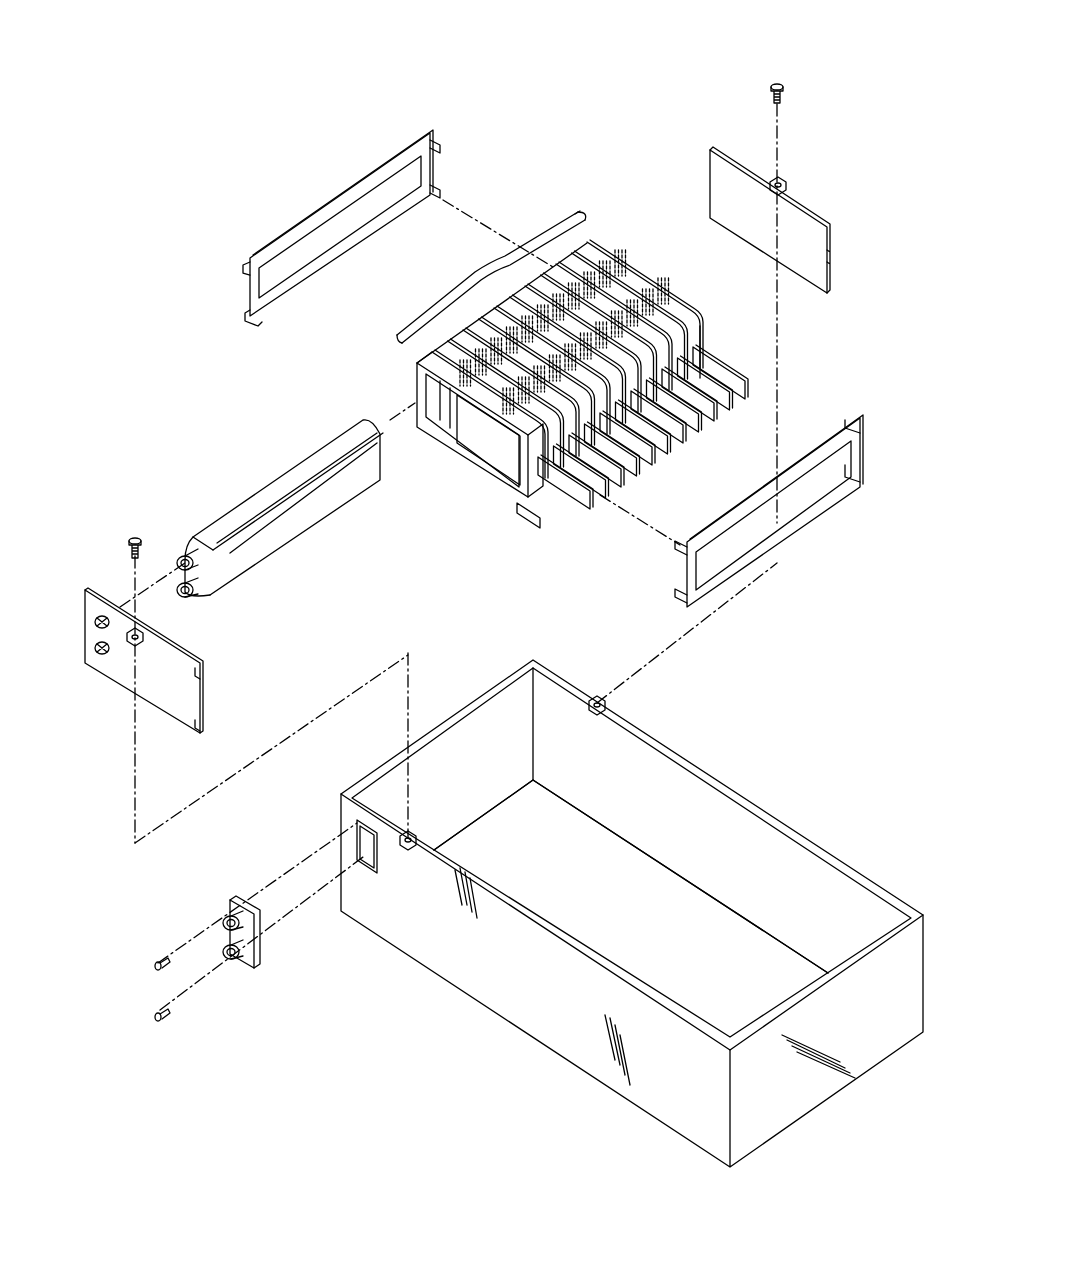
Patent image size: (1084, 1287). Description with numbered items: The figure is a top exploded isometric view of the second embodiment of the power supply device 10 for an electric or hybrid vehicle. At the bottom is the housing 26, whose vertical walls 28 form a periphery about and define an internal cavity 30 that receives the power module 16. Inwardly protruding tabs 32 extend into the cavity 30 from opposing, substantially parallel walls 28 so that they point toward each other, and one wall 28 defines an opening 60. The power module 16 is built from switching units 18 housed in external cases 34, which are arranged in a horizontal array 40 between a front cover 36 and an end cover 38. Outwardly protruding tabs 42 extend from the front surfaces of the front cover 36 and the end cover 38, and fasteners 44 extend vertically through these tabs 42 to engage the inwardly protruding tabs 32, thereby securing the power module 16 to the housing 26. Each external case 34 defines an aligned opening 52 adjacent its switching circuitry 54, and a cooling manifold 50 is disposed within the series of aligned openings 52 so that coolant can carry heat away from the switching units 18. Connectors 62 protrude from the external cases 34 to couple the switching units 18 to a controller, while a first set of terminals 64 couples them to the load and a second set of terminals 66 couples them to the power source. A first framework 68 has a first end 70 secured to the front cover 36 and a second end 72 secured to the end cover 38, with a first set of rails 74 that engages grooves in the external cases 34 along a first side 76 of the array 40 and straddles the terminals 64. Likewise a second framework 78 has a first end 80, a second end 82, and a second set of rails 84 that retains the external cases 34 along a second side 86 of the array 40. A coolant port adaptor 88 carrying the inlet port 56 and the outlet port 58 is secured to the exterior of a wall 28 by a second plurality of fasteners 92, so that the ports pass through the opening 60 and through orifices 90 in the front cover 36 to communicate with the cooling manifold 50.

The power supply device 10 is at (390, 68).
The power module 16 is at (607, 128).
The switching units 18 is at (465, 338).
The external cases 34 is at (612, 440).
The housing 26 is at (845, 1105).
The walls 28 is at (488, 790).
The internal cavity 30 is at (686, 968).
The inwardly protruding tabs 32 is at (412, 840).
The front cover 36 is at (193, 645).
The end cover 38 is at (815, 205).
The array 40 is at (480, 270).
The outwardly protruding tabs 42 is at (785, 178).
The fasteners 44 is at (783, 90).
The cooling manifold 50 is at (277, 473).
The aligned openings 52 is at (420, 433).
The switching circuitry 54 is at (490, 438).
The inlet port 56 is at (262, 937).
The outlet port 58 is at (260, 953).
The opening 60 is at (363, 873).
The connectors 62 is at (672, 292).
The first set of terminals 64 is at (700, 380).
The second set of terminals 66 is at (618, 492).
The first framework 68 is at (848, 503).
The first end 70 is at (712, 588).
The second end 72 is at (867, 453).
The first set of rails 74 is at (787, 480).
The first side 76 is at (745, 420).
The second framework 78 is at (243, 263).
The first end 80 is at (247, 290).
The second end 82 is at (427, 170).
The second set of rails 84 is at (350, 248).
The second side 86 is at (537, 213).
The coolant port adaptor 88 is at (242, 895).
The orifices 90 is at (83, 657).
The second plurality of fasteners 92 is at (152, 1018).